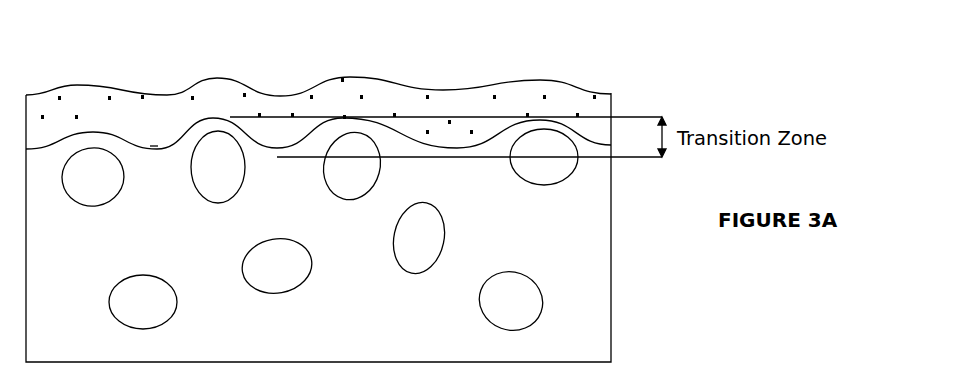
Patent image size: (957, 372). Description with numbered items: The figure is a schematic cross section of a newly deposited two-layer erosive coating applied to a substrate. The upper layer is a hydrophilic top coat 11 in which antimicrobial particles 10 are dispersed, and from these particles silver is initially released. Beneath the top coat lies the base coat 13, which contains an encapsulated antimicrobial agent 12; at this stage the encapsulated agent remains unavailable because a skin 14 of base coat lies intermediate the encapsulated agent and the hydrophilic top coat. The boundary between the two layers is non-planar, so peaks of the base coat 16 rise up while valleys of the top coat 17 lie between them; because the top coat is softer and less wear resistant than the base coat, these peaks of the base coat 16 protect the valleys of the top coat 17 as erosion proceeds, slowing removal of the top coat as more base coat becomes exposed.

The antimicrobial particles 10 is at (470, 113).
The hydrophilic top coat 11 is at (569, 100).
The encapsulated antimicrobial agent 12 is at (430, 249).
The base coat 13 is at (588, 300).
The skin 14 is at (260, 138).
The peaks of the base coat 16 is at (235, 100).
The valleys of the top coat 17 is at (156, 131).